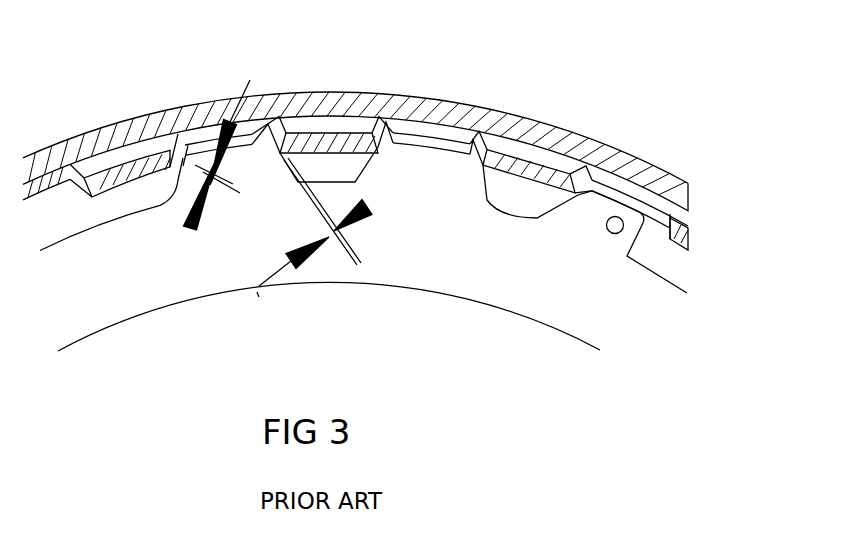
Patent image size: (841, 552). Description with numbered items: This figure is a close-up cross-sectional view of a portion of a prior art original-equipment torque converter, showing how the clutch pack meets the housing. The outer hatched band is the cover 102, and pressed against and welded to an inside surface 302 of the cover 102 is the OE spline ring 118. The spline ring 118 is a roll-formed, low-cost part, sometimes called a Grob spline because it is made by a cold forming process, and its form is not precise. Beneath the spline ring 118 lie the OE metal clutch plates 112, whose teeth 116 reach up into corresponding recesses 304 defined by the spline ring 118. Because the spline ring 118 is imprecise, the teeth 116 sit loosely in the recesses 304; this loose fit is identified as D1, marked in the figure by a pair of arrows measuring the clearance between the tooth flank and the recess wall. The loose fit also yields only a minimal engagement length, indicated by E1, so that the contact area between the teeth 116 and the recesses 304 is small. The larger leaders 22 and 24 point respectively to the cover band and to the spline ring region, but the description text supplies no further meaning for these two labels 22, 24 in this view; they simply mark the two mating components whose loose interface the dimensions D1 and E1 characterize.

The outer ring assembly 22 is at (355, 105).
The corrugated support sheet 24 is at (359, 129).
The cover 102 is at (407, 105).
The OE metal clutch plate 112 is at (527, 275).
The teeth 116 is at (590, 212).
The OE spline ring 118 is at (152, 165).
The inside surface 302 is at (346, 124).
The recesses 304 is at (688, 186).
The engagement length E1 is at (190, 228).
The loose fit D1 is at (374, 208).